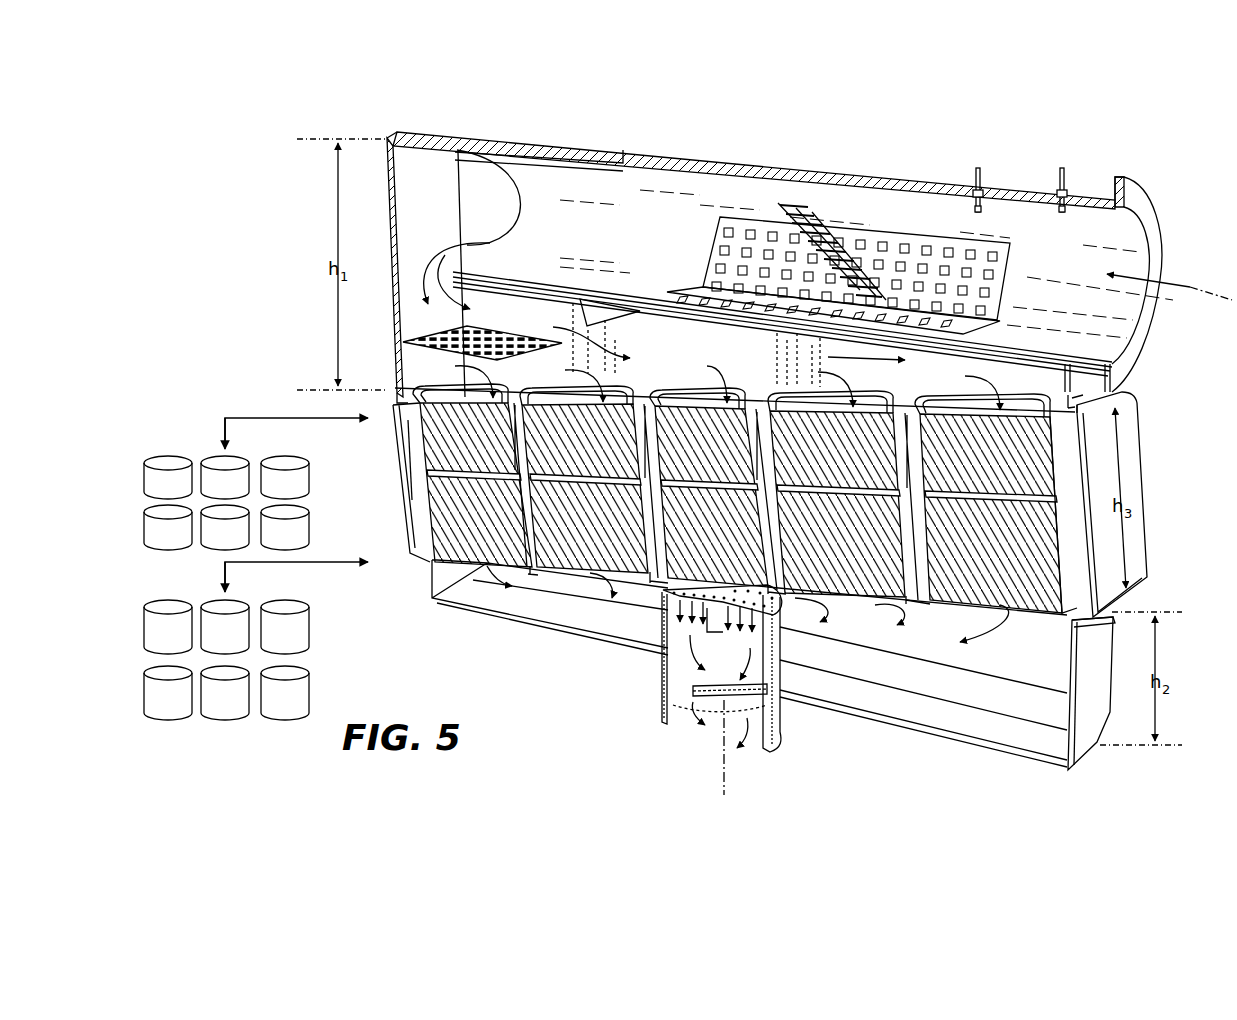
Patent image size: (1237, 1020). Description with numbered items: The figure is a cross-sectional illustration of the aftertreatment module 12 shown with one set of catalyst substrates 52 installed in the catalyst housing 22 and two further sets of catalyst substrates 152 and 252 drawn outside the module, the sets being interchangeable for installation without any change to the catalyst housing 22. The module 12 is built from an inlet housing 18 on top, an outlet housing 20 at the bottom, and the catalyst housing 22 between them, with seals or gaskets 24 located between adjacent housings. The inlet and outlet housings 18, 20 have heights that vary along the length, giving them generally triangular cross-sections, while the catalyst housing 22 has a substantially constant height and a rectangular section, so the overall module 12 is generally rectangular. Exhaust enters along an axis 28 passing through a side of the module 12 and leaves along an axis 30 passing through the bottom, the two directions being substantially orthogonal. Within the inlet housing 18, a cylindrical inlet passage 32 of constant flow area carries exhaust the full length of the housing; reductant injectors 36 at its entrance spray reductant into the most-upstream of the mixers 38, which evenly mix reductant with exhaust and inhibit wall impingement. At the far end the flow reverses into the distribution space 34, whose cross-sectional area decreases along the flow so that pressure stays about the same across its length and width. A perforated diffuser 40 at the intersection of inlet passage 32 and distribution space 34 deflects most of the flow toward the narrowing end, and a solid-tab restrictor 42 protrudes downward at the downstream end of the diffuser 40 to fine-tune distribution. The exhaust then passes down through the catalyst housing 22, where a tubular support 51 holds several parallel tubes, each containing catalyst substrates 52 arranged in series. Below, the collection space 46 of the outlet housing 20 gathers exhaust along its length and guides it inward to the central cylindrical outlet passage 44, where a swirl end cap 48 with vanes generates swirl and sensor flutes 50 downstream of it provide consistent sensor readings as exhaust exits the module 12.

The aftertreatment module 12 is at (373, 103).
The inlet housing 18 is at (392, 228).
The outlet housing 20 is at (428, 578).
The catalyst housing 22 is at (388, 496).
The seal or gasket 24 is at (1110, 393).
The axis 28 is at (1213, 302).
The axis 30 is at (724, 780).
The inlet passage 32 is at (560, 228).
The distribution space 34 is at (720, 363).
The reductant injector 36 is at (1062, 166).
The mixer 38 is at (877, 226).
The diffuser 40 is at (412, 340).
The restrictor 42 is at (576, 312).
The outlet passage 44 is at (683, 708).
The collection space 46 is at (905, 644).
The swirl end cap 48 is at (662, 627).
The sensor flute 50 is at (696, 691).
The tubular support 51 is at (778, 388).
The catalyst substrate 52 is at (476, 446).
The set of catalyst substrates 152 is at (177, 449).
The set of catalyst substrates 252 is at (333, 652).